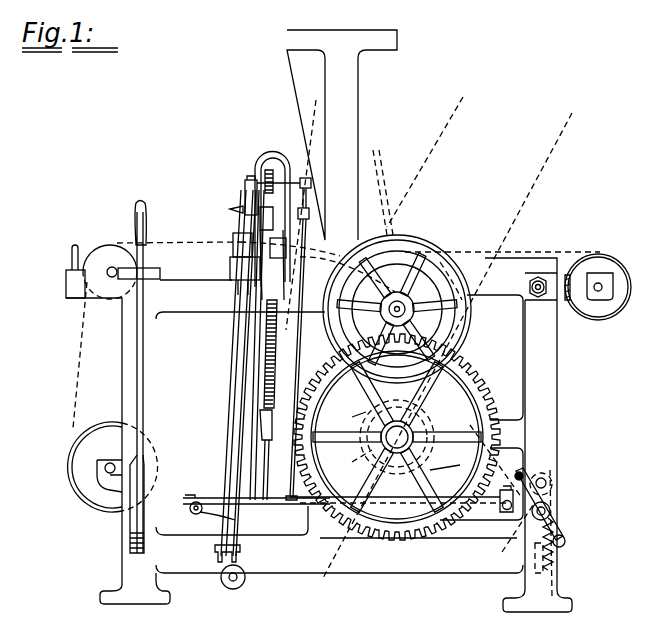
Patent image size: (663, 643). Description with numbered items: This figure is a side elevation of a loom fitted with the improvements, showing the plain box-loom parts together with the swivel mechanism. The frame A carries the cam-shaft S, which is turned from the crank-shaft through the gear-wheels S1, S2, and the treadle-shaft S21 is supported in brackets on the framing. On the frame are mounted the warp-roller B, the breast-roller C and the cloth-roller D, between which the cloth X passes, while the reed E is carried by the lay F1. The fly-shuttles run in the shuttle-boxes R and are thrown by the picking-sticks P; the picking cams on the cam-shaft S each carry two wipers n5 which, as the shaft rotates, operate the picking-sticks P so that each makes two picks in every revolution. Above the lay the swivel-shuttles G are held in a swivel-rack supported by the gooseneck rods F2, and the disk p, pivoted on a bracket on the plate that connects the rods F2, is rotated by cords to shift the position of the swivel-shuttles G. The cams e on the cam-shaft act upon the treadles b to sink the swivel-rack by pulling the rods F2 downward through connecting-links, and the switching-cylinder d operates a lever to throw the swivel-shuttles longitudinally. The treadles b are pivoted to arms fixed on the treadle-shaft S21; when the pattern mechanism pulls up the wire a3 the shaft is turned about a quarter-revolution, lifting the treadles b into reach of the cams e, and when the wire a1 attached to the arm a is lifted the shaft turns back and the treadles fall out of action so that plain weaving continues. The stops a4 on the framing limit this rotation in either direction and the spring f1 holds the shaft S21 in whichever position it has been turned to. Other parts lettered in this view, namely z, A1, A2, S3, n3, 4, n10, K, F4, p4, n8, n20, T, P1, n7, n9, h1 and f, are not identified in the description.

The top bracket z is at (530, 194).
The frame A is at (319, 435).
The band wheel rim A1 is at (470, 318).
The band wheel spokes A2 is at (468, 333).
The wire a1 is at (425, 162).
The wire a3 is at (385, 225).
The gear-wheel S2 is at (502, 276).
The belt S3 is at (317, 274).
The cloth X is at (296, 331).
The gear-wheel S1 is at (478, 383).
The cam-shaft S is at (397, 437).
The wipers n5 is at (420, 410).
The switching-cylinder d is at (352, 417).
The lever n3 is at (351, 461).
The cams e is at (445, 467).
The belt 4 is at (495, 488).
The rod n10 is at (400, 428).
The breast-roller C is at (113, 272).
The cloth-roller D is at (113, 467).
The warp-roller B is at (598, 287).
The lever K is at (147, 208).
The gooseneck rods F2 is at (270, 160).
The rod p4 is at (301, 215).
The disk p is at (292, 178).
The block F4 is at (245, 188).
The swivel-shuttles G is at (230, 209).
The shuttle-boxes R is at (233, 241).
The lay F1 is at (230, 268).
The reed E is at (284, 249).
The nut / lever n8 is at (311, 182).
The nut and rod n20 is at (311, 214).
The rod T is at (222, 431).
The picking-sticks P is at (228, 403).
The rack rod P1 is at (230, 381).
The pivot n7 is at (190, 511).
The link n9 is at (208, 513).
The roller h1 is at (273, 577).
The stops a4 is at (522, 470).
The arm a is at (563, 532).
The treadles b is at (548, 483).
The roller f is at (547, 470).
The spring f1 is at (553, 560).
The treadle-shaft S21 is at (525, 541).